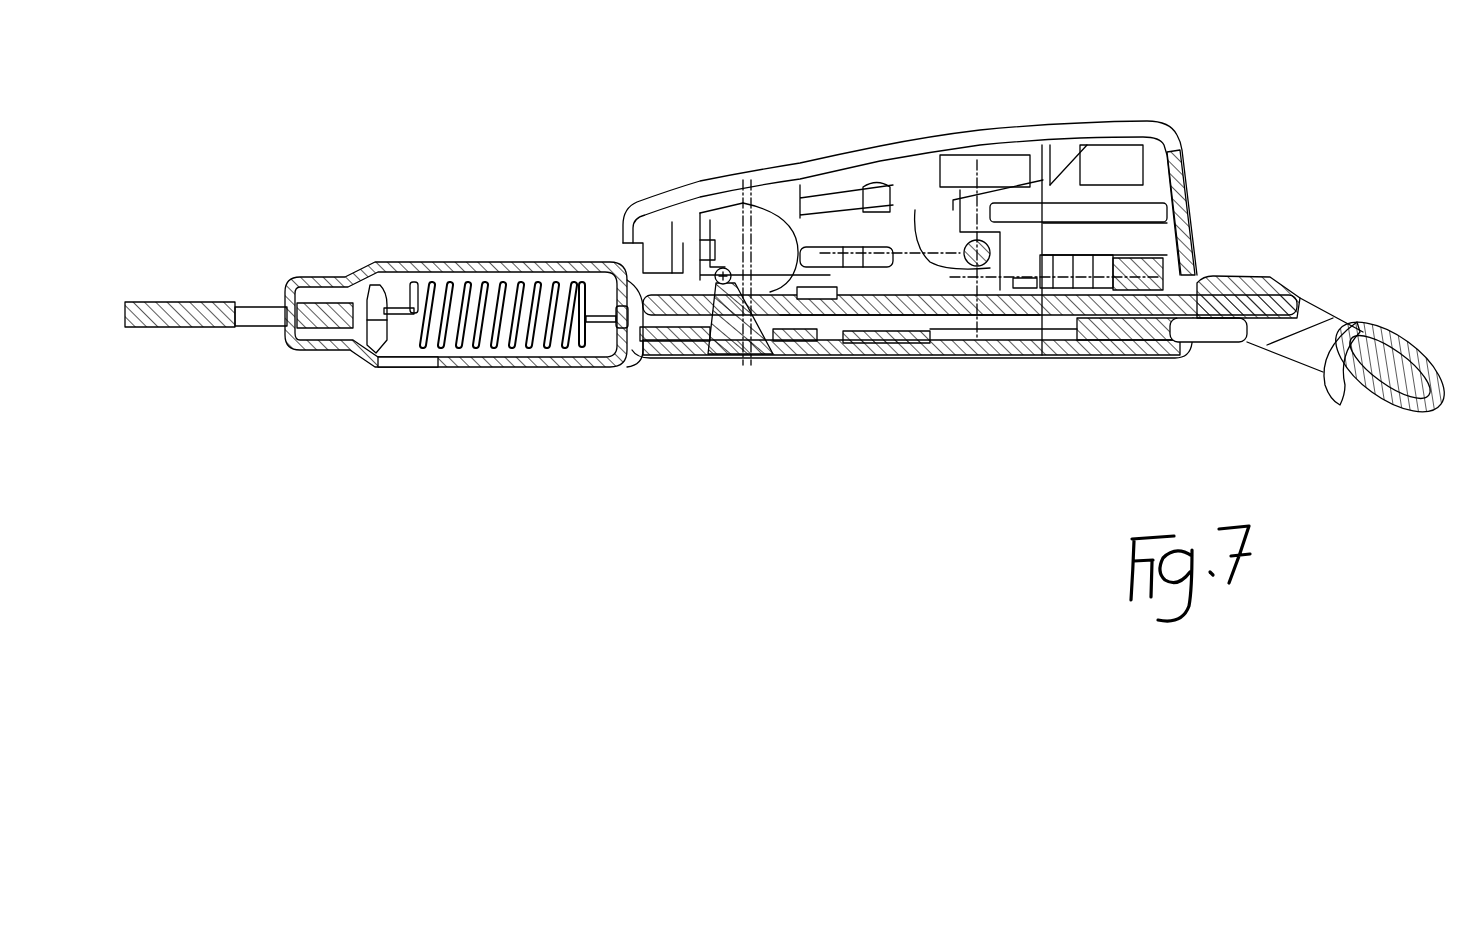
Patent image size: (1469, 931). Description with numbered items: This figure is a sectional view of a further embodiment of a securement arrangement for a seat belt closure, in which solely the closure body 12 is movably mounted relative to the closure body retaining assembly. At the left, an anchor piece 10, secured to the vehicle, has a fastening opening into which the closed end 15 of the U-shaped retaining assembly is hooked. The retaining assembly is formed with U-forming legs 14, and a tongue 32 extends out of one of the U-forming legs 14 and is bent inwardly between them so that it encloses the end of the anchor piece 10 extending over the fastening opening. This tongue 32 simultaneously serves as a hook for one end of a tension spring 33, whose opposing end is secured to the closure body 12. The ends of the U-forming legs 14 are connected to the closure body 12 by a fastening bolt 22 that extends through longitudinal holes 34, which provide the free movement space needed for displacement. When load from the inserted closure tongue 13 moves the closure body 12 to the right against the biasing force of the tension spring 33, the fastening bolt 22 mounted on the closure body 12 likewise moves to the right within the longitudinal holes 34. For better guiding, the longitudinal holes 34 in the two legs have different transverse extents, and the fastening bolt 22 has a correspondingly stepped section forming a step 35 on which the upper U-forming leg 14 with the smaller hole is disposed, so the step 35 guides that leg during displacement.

The anchor piece 10 is at (168, 314).
The closure body 12 is at (842, 237).
The closure tongue 13 is at (1383, 382).
The U-forming legs 14 is at (460, 265).
The closed end 15 is at (257, 318).
The fastening bolt 22 is at (741, 360).
The tongue 32 is at (385, 347).
The tension spring 33 is at (523, 362).
The longitudinal holes 34 is at (780, 358).
The step 35 is at (712, 356).